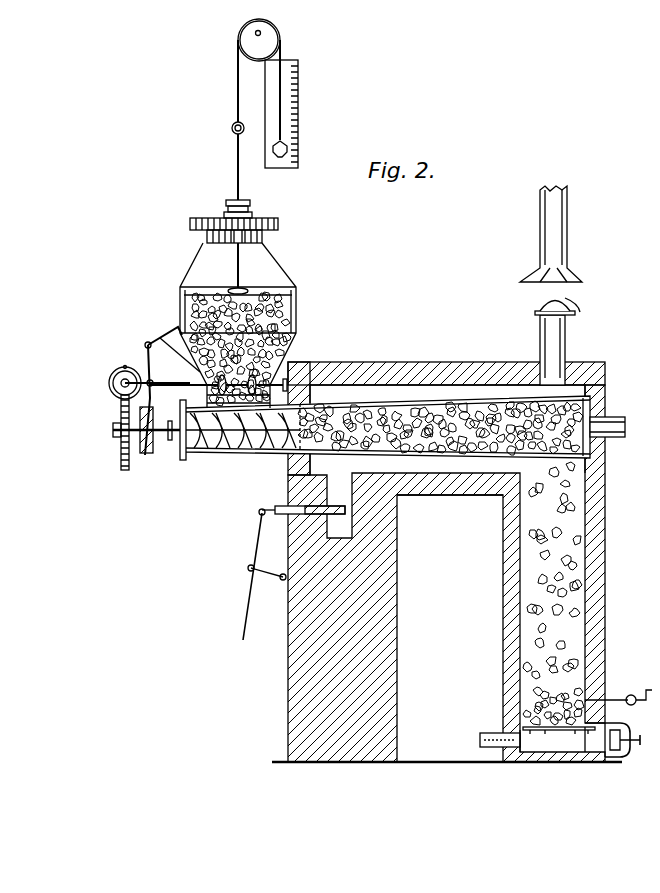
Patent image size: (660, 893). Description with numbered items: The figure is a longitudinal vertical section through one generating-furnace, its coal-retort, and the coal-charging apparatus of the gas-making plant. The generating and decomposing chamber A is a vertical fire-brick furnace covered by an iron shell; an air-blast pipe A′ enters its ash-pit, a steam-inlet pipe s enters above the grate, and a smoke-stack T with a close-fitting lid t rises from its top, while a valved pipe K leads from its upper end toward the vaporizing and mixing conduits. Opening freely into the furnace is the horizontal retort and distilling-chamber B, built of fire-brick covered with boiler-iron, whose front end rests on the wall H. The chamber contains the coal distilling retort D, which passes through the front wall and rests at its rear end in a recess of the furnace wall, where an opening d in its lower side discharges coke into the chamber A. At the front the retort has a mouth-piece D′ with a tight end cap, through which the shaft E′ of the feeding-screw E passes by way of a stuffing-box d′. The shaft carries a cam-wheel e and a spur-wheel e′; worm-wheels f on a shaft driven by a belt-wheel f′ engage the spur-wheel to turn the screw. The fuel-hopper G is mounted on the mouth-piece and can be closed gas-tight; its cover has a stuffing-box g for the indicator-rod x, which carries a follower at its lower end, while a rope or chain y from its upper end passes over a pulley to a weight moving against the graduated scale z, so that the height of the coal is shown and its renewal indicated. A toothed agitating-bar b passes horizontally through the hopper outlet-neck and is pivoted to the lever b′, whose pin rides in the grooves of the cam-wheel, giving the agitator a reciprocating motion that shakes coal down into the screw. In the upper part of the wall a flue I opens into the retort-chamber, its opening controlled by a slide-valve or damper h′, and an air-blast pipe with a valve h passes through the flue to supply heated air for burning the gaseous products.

The generating and decomposing chamber A is at (453, 562).
The retort and distilling-chamber B is at (447, 402).
The wall H is at (450, 555).
The coal distilling retort D is at (387, 441).
The mouth-piece D′ is at (240, 455).
The opening d is at (552, 452).
The feeding-screw E is at (275, 455).
The stuffing-box d′ is at (180, 440).
The spur-wheel e′ is at (136, 419).
The cam-wheel e is at (151, 424).
The shaft E′ is at (133, 458).
The worm-wheel f is at (108, 385).
The belt-wheel f′ is at (125, 366).
The lever b′ is at (172, 396).
The agitating-bar b is at (276, 382).
The fuel-hopper G is at (223, 325).
The stuffing-box g is at (234, 219).
The rope or chain y is at (245, 120).
The indicator-rod x is at (247, 89).
The graduated scale z is at (287, 114).
The smoke-stack T is at (556, 285).
The lid t is at (538, 306).
The pipe K is at (618, 418).
The flue I is at (302, 521).
The valve h is at (256, 583).
The slide-valve or damper h′ is at (267, 550).
The air-blast pipe A′ is at (533, 724).
The steam-inlet pipe s is at (618, 723).